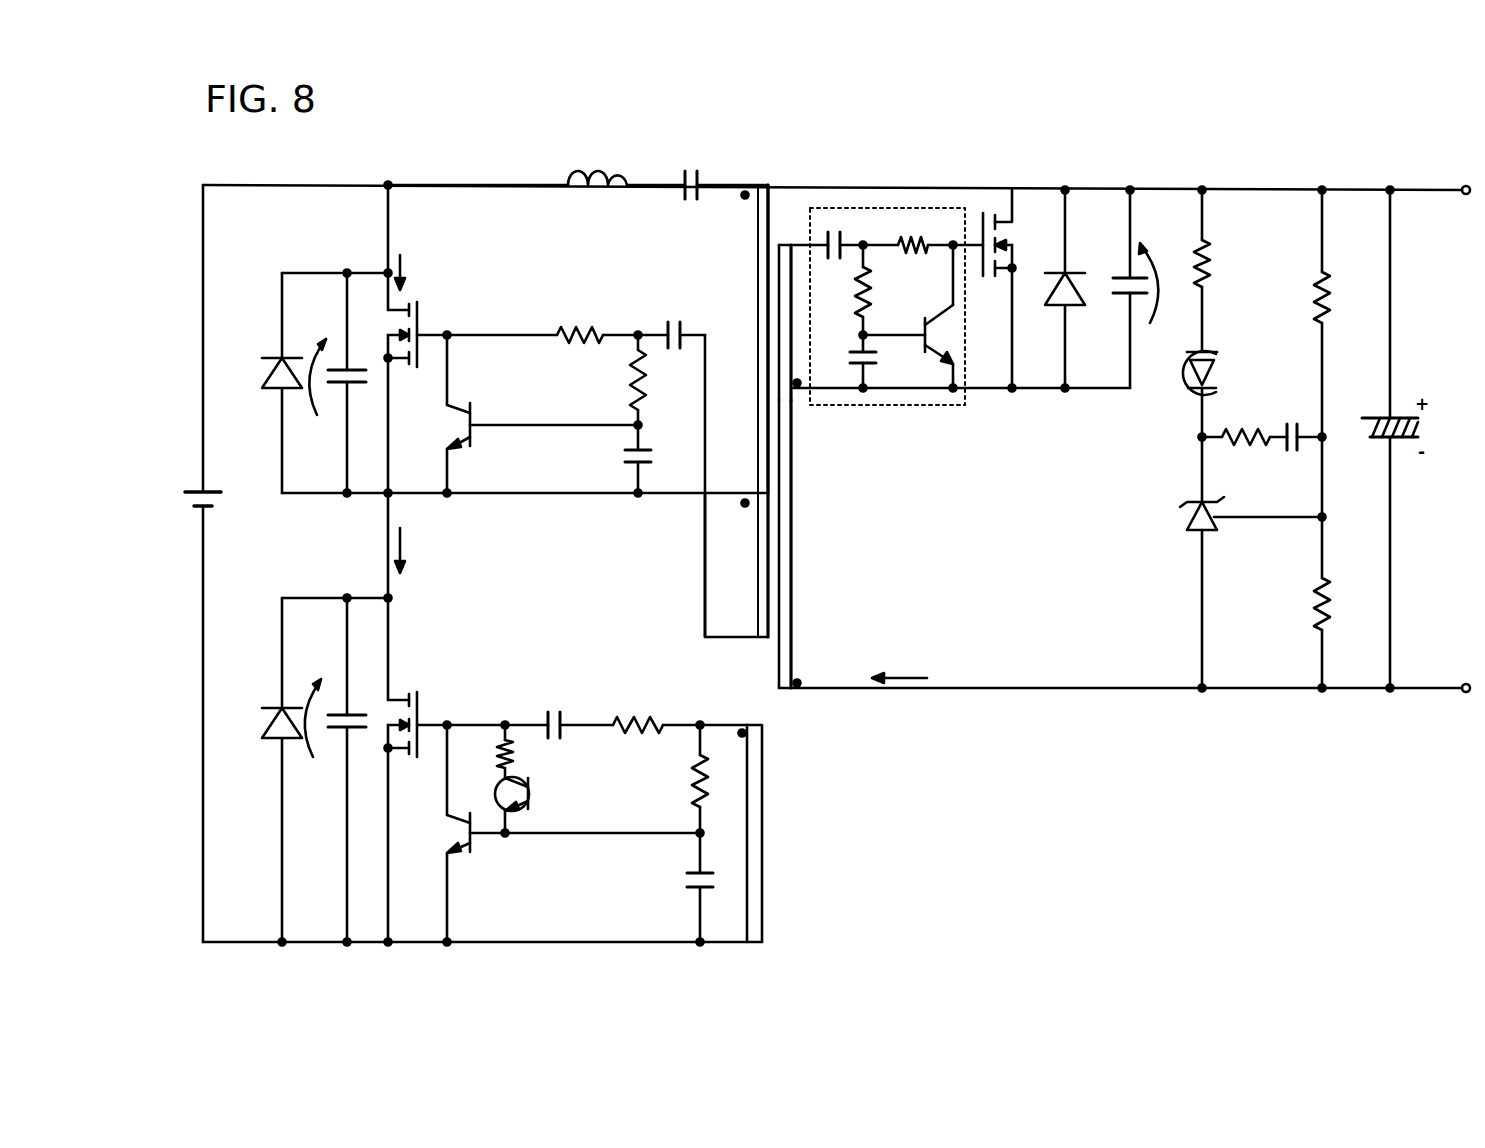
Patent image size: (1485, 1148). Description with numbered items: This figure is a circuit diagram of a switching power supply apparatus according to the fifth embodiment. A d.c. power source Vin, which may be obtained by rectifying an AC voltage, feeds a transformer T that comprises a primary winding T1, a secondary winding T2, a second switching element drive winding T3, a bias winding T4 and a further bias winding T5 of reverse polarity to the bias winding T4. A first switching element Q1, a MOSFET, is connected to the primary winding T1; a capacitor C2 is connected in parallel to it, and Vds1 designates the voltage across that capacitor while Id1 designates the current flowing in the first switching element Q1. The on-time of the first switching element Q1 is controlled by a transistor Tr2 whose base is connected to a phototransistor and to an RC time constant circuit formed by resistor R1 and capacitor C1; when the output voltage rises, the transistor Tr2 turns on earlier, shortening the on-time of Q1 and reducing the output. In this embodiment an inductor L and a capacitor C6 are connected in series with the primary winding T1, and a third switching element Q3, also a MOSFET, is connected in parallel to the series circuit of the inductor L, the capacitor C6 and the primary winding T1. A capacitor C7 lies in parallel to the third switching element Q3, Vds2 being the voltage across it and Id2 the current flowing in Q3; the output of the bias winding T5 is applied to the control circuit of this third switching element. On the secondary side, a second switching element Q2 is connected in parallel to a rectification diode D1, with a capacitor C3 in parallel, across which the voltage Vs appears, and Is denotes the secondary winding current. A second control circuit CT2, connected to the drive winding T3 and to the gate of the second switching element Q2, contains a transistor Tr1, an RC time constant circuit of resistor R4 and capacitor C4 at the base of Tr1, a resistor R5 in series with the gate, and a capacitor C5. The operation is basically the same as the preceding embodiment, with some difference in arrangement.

The d.c. power source Vin is at (186, 485).
The voltage across capacitor C7 Vds2 is at (320, 383).
The capacitor C7 is at (352, 383).
The current flowing in the third switching element Id2 is at (419, 272).
The third switching element Q3 is at (420, 328).
The inductor L is at (536, 165).
The capacitor C6 is at (724, 175).
The transformer T is at (767, 425).
The primary winding T1 is at (746, 339).
The bias winding T5 is at (736, 565).
The second switching element drive winding T3 is at (803, 320).
The secondary winding T2 is at (804, 544).
The secondary winding current Is is at (911, 673).
The second control circuit CT2 is at (896, 281).
The capacitor C5 is at (859, 235).
The resistor R5 is at (940, 232).
The resistor R4 is at (843, 298).
The capacitor C4 is at (845, 368).
The transistor Tr1 is at (910, 318).
The second switching element Q2 is at (1003, 277).
The rectification diode D1 is at (1073, 289).
The capacitor C3 is at (1121, 288).
The voltage across capacitor C3 Vs is at (1148, 297).
The current flowing in the first switching element Id1 is at (419, 550).
The voltage across capacitor C2 Vds1 is at (301, 770).
The capacitor C2 is at (352, 770).
The first switching element Q1 is at (416, 713).
The transistor Tr2 is at (469, 833).
The resistor R1 is at (682, 779).
The capacitor C1 is at (684, 887).
The bias winding T4 is at (747, 822).